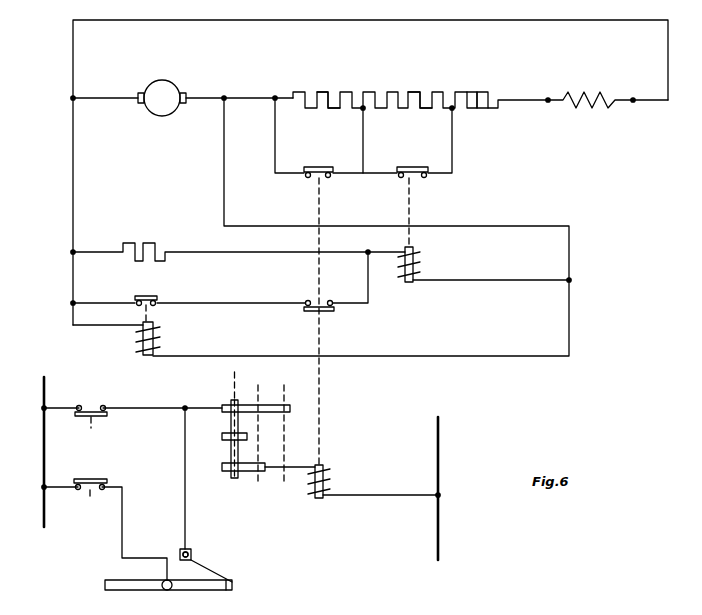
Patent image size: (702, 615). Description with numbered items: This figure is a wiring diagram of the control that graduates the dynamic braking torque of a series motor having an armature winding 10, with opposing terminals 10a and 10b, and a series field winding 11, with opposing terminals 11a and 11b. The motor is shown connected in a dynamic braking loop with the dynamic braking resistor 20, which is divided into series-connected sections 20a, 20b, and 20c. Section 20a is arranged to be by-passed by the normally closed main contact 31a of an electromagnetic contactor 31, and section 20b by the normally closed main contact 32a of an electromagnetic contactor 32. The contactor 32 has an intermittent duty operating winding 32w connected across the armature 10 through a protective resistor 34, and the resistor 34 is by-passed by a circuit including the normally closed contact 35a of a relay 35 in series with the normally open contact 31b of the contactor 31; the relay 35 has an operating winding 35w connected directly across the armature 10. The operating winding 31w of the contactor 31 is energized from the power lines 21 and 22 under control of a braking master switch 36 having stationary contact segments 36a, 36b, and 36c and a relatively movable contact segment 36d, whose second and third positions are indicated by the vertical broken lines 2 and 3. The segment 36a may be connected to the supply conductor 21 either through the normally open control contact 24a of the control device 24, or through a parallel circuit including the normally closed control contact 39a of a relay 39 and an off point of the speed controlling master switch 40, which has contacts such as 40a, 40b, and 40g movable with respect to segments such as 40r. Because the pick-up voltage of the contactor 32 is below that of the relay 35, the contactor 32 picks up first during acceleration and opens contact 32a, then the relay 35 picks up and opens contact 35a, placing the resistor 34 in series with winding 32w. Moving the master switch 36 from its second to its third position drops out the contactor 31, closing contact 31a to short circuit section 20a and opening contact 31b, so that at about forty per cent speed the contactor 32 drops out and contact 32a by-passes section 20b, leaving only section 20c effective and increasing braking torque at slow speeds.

The second position 2 is at (257, 427).
The third position 3 is at (283, 427).
The armature winding 10 is at (160, 86).
The armature terminal 10a is at (140, 103).
The armature terminal 10b is at (185, 104).
The series field winding 11 is at (580, 92).
The field winding terminal 11a is at (634, 103).
The field winding terminal 11b is at (548, 114).
The dynamic braking resistor 20 is at (420, 86).
The resistor section 20a is at (334, 110).
The resistor section 20b is at (424, 110).
The resistor section 20c is at (473, 110).
The power line 21 is at (44, 447).
The power line 22 is at (440, 463).
The control contact 24 is at (94, 431).
The control contact 24a is at (91, 403).
The electromagnetic contactor 31 is at (322, 214).
The main contact 31a is at (317, 166).
The contact 31b is at (312, 292).
The operating winding 31w is at (331, 478).
The electromagnetic contactor 32 is at (412, 214).
The main contact 32a is at (416, 166).
The operating winding 32w is at (421, 266).
The protective resistor 34 is at (139, 248).
The relay 35 is at (149, 316).
The contact 35a is at (144, 291).
The operating winding 35w is at (156, 338).
The braking master switch 36 is at (255, 438).
The stationary contact segment 36a is at (302, 400).
The stationary contact segment 36b is at (222, 436).
The stationary contact segment 36c is at (222, 466).
The movable contact segment 36d is at (233, 480).
The relay 39 is at (88, 497).
The control contact 39a is at (92, 478).
The speed controlling master switch 40 is at (163, 597).
The contact 40a is at (180, 549).
The contact 40b is at (167, 591).
The contact 40g is at (178, 556).
The segment 40r is at (233, 586).